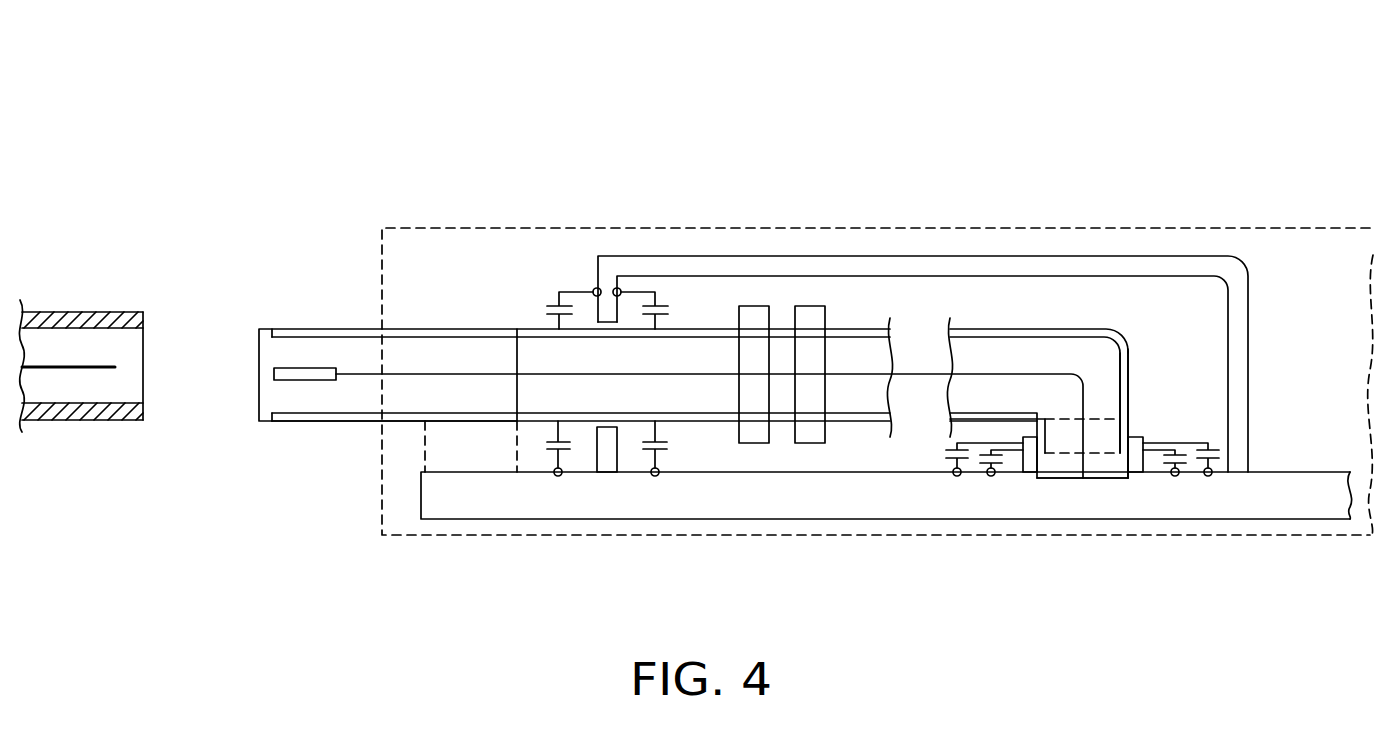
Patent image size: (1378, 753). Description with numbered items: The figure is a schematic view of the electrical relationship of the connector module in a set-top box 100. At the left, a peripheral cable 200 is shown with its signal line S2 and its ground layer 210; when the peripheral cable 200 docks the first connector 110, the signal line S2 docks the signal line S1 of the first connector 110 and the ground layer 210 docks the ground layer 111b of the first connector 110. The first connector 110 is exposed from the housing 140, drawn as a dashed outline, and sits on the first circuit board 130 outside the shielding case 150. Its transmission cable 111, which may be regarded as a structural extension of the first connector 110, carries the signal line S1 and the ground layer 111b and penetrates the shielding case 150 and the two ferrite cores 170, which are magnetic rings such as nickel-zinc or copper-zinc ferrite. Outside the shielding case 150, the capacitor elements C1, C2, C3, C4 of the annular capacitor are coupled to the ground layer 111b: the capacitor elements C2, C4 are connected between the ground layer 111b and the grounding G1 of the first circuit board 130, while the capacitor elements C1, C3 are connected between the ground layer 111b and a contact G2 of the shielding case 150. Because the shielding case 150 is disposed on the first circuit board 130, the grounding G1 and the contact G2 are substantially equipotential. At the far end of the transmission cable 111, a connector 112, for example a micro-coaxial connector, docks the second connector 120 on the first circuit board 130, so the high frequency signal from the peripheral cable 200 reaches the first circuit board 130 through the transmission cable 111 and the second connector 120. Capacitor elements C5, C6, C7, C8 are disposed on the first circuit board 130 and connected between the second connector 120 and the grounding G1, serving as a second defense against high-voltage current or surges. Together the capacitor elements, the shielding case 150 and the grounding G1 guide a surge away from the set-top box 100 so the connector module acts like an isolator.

The set-top box 100 is at (838, 125).
The first connector 110 is at (296, 329).
The transmission cable 111 is at (860, 308).
The ground layer 111b is at (487, 330).
The connector 112 is at (1120, 430).
The second connector 120 is at (1105, 478).
The first circuit board 130 is at (889, 500).
The housing 140 is at (1148, 227).
The shielding case 150 is at (1022, 262).
The ferrite core 170 is at (810, 306).
The peripheral cable 200 is at (101, 175).
The ground layer 210 is at (128, 410).
The signal line S1 is at (358, 378).
The signal line S2 is at (80, 372).
The capacitor element C1 is at (677, 310).
The capacitor element C2 is at (685, 437).
The capacitor element C3 is at (543, 312).
The capacitor element C4 is at (541, 447).
The capacitor element C5 is at (1222, 455).
The capacitor element C6 is at (1158, 462).
The capacitor element C7 is at (1008, 462).
The capacitor element C8 is at (940, 456).
The grounding G1 is at (558, 478).
The contact G2 is at (596, 287).